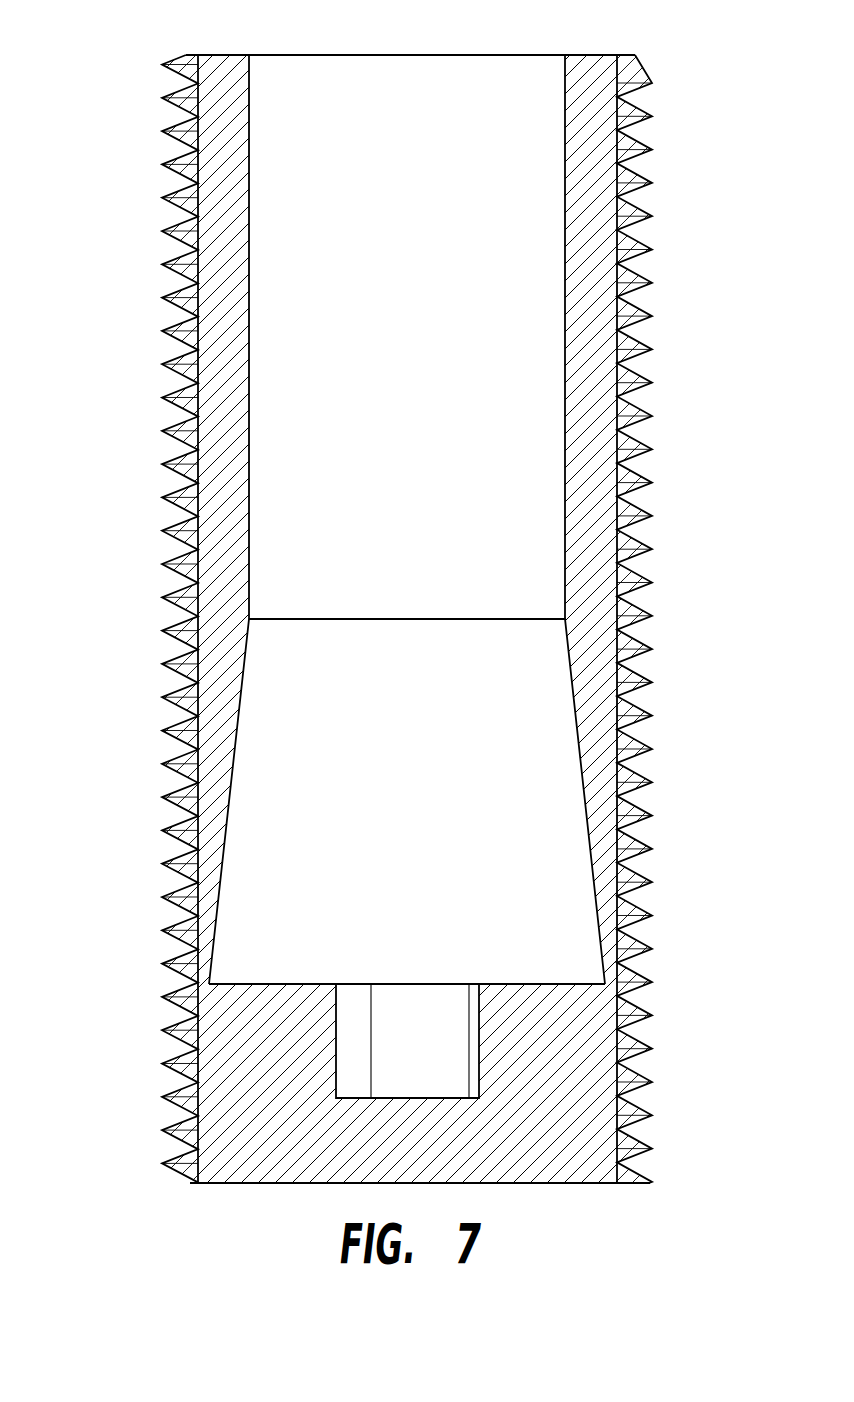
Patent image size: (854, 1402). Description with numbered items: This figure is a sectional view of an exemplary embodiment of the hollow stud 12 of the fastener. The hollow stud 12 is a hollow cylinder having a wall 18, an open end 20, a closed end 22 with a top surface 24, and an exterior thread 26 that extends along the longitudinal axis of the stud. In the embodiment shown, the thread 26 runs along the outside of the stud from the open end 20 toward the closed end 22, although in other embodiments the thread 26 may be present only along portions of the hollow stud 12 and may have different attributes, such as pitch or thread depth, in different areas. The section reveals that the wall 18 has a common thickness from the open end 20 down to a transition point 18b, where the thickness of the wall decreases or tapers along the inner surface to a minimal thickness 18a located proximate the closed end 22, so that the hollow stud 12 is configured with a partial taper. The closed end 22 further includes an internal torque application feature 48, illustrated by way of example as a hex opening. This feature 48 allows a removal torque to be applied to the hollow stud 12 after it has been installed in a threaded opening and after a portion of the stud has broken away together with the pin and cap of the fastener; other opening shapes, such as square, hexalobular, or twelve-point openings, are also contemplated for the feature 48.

The hollow stud 12 is at (128, 48).
The wall 18 is at (598, 250).
The minimal thickness 18a is at (608, 984).
The transition point 18b is at (590, 622).
The open end 20 is at (452, 60).
The closed end 22 is at (555, 1183).
The top surface 24 is at (597, 58).
The exterior thread 26 is at (165, 668).
The internal torque application feature 48 is at (350, 1053).